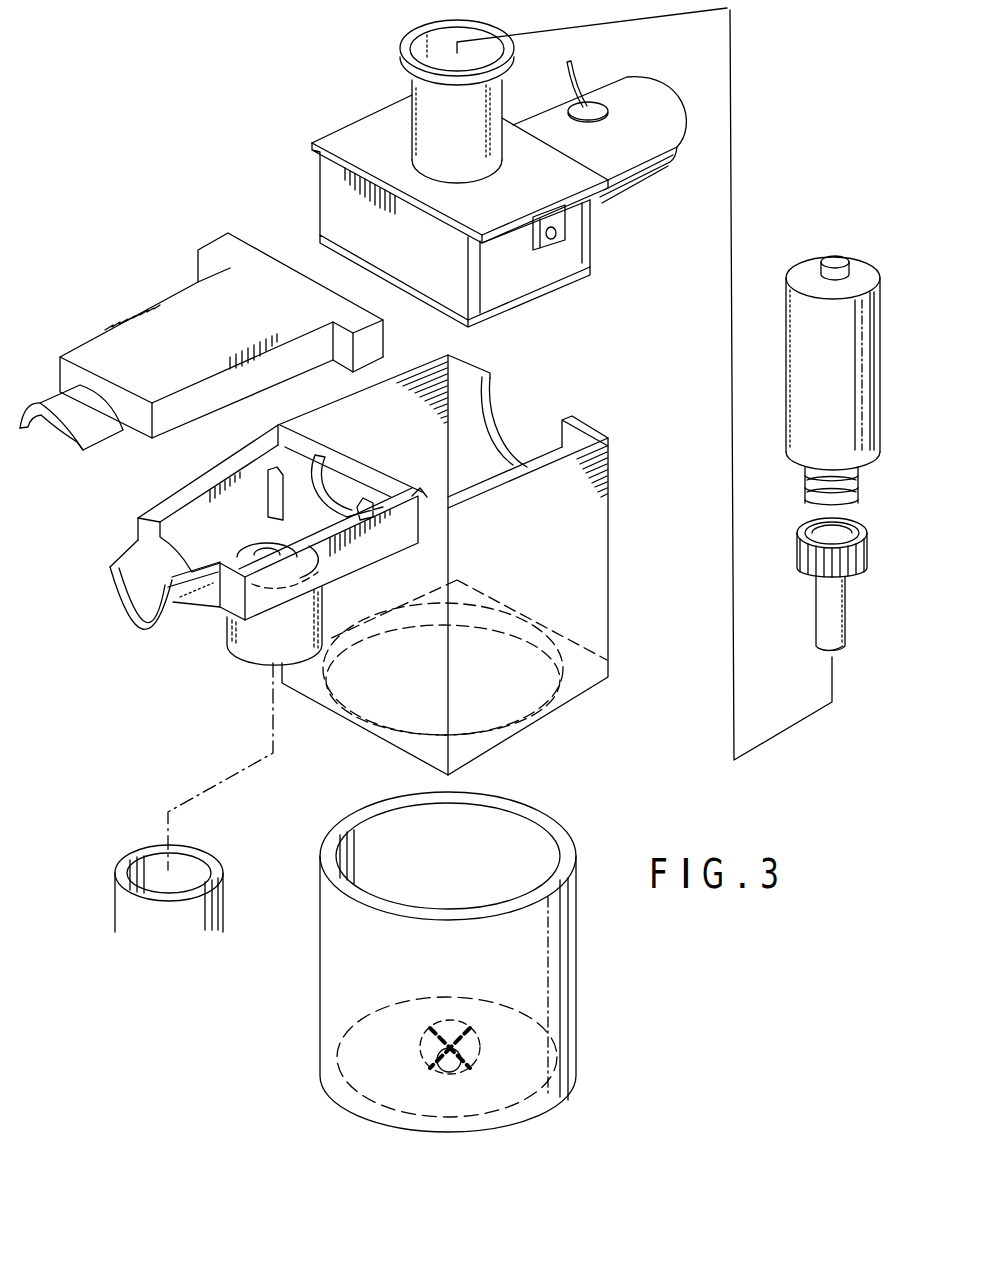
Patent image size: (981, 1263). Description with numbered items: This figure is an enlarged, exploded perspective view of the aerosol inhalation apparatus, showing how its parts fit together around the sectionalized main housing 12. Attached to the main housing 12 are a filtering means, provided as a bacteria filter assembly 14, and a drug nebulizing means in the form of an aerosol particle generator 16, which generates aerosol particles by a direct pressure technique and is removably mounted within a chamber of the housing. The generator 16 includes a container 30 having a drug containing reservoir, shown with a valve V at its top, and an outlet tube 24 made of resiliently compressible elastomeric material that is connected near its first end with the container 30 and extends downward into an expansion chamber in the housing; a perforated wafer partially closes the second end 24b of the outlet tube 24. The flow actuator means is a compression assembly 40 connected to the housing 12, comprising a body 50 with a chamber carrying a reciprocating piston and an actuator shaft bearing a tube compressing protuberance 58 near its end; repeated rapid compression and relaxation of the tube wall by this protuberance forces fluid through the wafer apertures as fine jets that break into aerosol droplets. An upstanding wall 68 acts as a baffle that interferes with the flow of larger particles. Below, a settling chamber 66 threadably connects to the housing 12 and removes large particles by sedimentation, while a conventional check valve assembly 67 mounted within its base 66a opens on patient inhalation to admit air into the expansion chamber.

The main housing 12 is at (216, 163).
The compression assembly 40 is at (670, 92).
The tube compressing protuberance 58 is at (578, 72).
The body 50 is at (660, 168).
The upstanding wall 68 is at (363, 473).
The aerosol particle generator 16 is at (780, 289).
The container 30 is at (868, 306).
The valve V is at (835, 258).
The outlet tube 24 is at (820, 607).
The second end 24b is at (820, 657).
The bacteria filter assembly 14 is at (110, 880).
The settling chamber 66 is at (578, 975).
The base 66a is at (578, 1023).
The check valve assembly 67 is at (433, 1065).